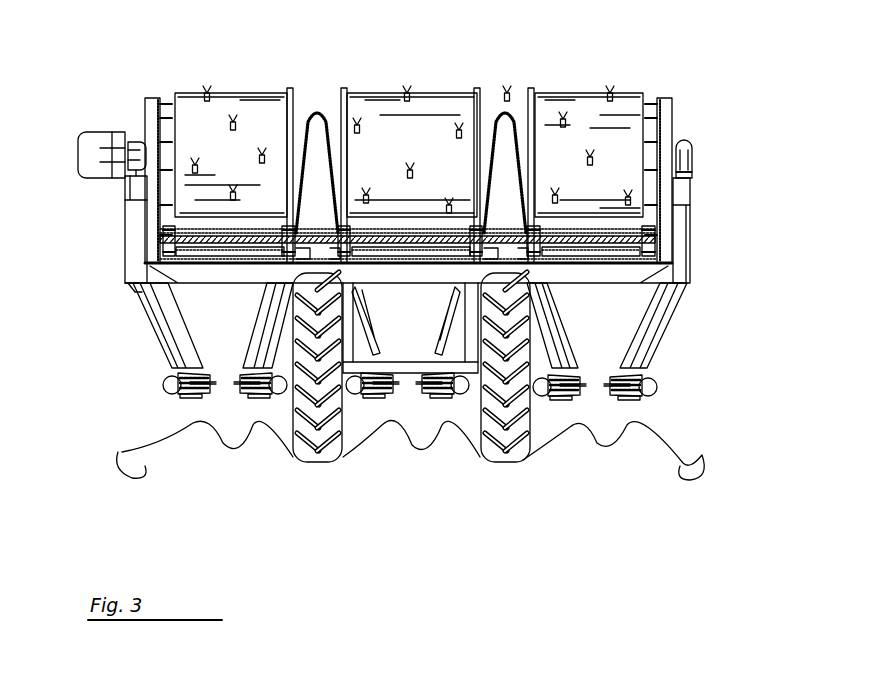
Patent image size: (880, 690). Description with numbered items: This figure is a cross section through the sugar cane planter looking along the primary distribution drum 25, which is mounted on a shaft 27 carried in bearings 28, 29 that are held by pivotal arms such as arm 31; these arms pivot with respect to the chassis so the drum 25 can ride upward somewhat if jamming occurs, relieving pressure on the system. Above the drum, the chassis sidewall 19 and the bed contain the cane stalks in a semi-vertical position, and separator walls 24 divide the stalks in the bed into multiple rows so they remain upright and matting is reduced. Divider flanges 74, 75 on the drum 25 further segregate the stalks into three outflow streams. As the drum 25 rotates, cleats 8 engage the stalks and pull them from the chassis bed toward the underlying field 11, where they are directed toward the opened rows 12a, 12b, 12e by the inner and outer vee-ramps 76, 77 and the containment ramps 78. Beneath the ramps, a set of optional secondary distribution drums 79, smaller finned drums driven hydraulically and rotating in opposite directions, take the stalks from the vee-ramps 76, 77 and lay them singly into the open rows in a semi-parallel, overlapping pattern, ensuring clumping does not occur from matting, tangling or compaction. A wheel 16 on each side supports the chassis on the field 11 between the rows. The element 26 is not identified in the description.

The cleats 8 is at (207, 86).
The field 11 is at (380, 476).
The opened row 12a is at (222, 445).
The opened row 12b is at (410, 445).
The fifth furrow 12e is at (598, 445).
The wheel 16 is at (300, 435).
The sidewall 19 is at (672, 98).
The separator walls 24 is at (313, 112).
The primary distribution drum 25 is at (408, 150).
The motor 26 is at (97, 134).
The drum shaft 27 is at (168, 155).
The bearing 28 is at (686, 142).
The bearing 29 is at (136, 142).
The pivotal arm 31 is at (690, 196).
The drum flange 74 is at (290, 88).
The drum flange 75 is at (477, 88).
The inner vee-ramp 76 is at (268, 338).
The outer vee-ramp 77 is at (440, 345).
The containment ramp 78 is at (168, 318).
The secondary distribution drum 79 is at (250, 395).